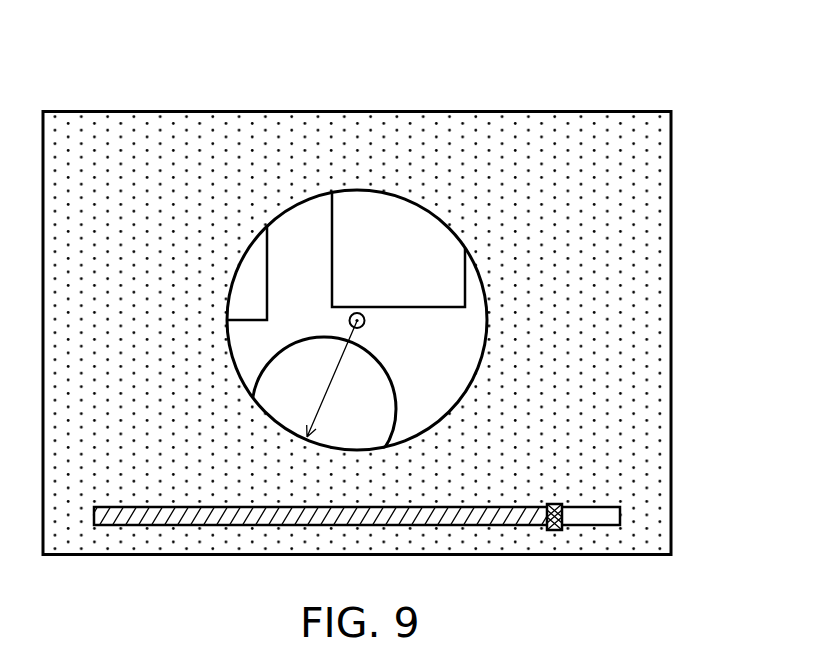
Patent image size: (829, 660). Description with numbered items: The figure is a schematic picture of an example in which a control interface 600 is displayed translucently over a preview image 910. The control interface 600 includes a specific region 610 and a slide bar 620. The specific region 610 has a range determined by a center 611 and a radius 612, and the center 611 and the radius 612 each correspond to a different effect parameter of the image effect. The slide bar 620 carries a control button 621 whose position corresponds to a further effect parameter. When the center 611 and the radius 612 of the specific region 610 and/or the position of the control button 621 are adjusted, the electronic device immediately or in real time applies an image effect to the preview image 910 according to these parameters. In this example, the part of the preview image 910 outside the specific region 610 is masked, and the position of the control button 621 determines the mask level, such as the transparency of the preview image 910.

The control interface 600 is at (672, 338).
The specific region 610 is at (288, 208).
The preview image 910 is at (396, 215).
The center 611 is at (364, 324).
The radius 612 is at (327, 393).
The slide bar 620 is at (358, 525).
The control button 621 is at (553, 531).